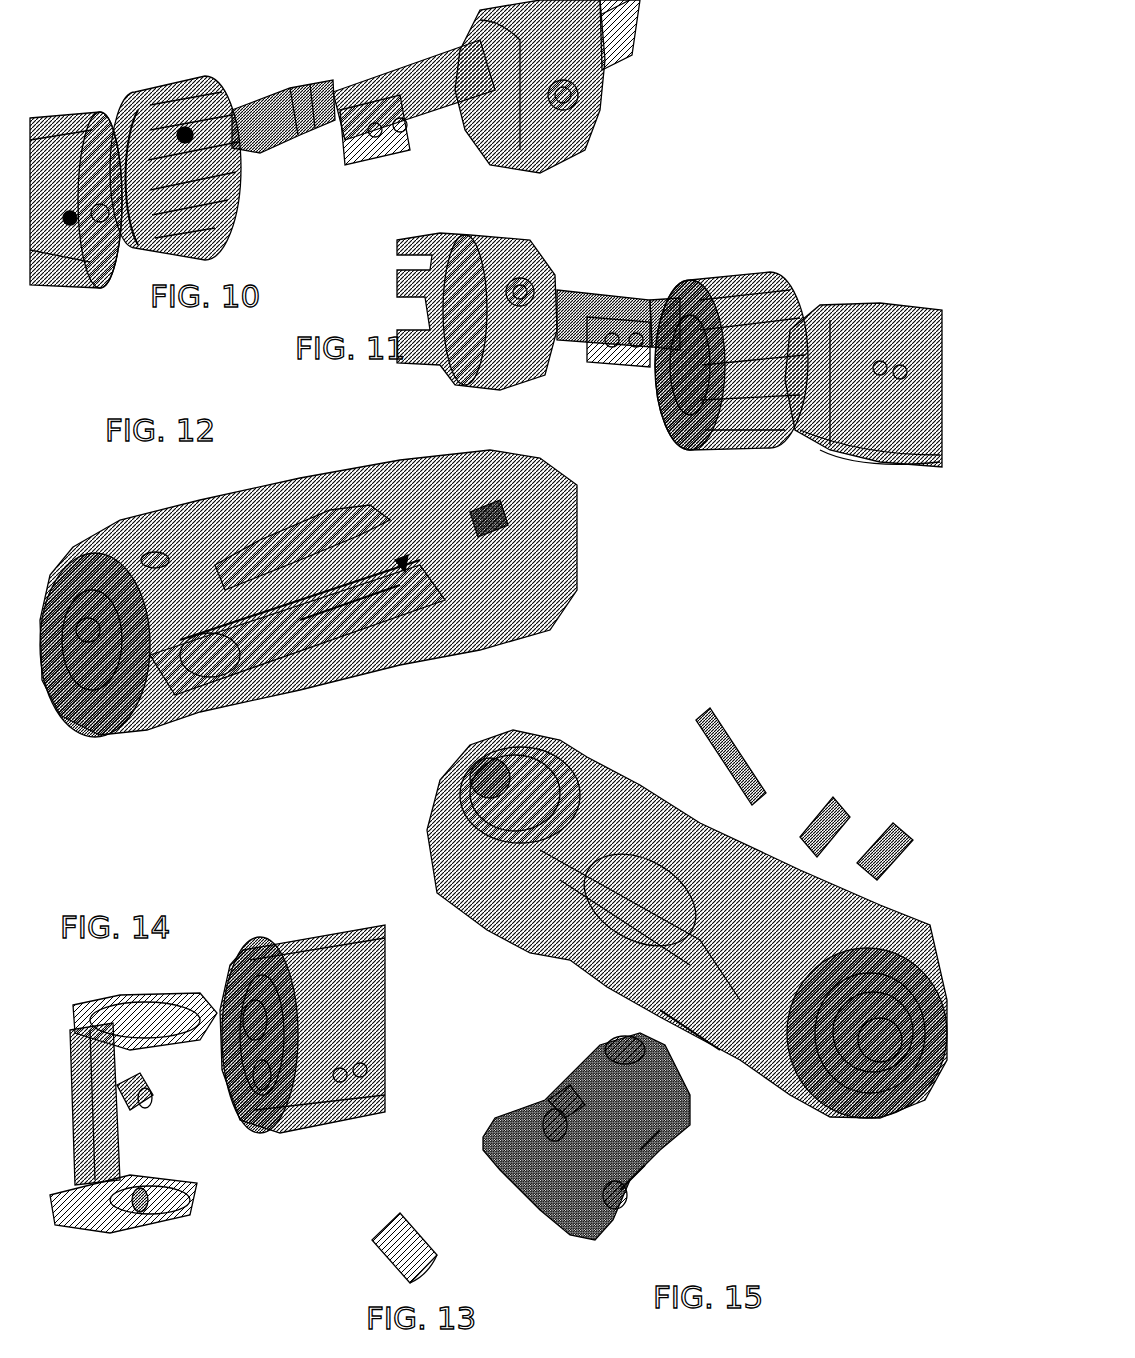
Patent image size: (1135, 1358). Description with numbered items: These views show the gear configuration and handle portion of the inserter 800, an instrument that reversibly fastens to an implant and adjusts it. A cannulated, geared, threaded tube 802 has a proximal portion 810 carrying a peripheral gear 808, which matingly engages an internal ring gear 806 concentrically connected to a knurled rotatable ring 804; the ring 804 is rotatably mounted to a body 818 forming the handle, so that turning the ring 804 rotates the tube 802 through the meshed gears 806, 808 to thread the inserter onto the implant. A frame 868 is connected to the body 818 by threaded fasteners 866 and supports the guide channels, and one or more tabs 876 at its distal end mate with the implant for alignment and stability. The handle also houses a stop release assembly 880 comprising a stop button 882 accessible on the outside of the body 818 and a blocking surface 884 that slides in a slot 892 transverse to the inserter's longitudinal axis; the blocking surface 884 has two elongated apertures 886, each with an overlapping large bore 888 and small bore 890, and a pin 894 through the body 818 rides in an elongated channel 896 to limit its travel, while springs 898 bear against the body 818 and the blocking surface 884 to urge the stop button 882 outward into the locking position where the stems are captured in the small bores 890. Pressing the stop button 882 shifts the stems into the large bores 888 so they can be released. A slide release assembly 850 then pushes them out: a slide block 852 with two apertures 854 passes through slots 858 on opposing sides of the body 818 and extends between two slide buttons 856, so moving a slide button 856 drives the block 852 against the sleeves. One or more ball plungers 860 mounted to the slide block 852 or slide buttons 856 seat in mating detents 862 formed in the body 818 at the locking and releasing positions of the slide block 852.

In FIG. 10, the inserter 800 is at (685, 30).
In FIG. 12, the inserter 800 is at (75, 535).
In FIG. 10, the threaded tube 802 is at (370, 78).
In FIG. 11, the threaded tube 802 is at (600, 300).
In FIG. 10, the rotatable ring 804 is at (195, 90).
In FIG. 11, the rotatable ring 804 is at (755, 432).
In FIG. 10, the internal ring gear 806 is at (150, 228).
In FIG. 11, the internal ring gear 806 is at (720, 305).
In FIG. 10, the peripheral gear 808 is at (265, 95).
In FIG. 11, the peripheral gear 808 is at (668, 300).
In FIG. 11, the proximal portion 810 is at (622, 285).
In FIG. 11, the body 818 is at (885, 318).
In FIG. 12, the body 818 is at (418, 482).
In FIG. 15, the body 818 is at (563, 753).
In FIG. 14, the slide release assembly 850 is at (205, 1160).
In FIG. 13, the slide release assembly 850 is at (442, 1268).
In FIG. 14, the slide block 852 is at (110, 1118).
In FIG. 14, the apertures 854 is at (68, 1107).
In FIG. 10, the slide button 856 is at (55, 125).
In FIG. 11, the slide button 856 is at (875, 458).
In FIG. 12, the slide button 856 is at (222, 668).
In FIG. 14, the slide button 856 is at (133, 1008).
In FIG. 13, the slot 858 is at (310, 940).
In FIG. 14, the ball plunger 860 is at (140, 1188).
In FIG. 13, the ball plunger 860 is at (378, 1235).
In FIG. 12, the detent 862 is at (355, 648).
In FIG. 13, the detent 862 is at (277, 965).
In FIG. 12, the threaded fastener 866 is at (155, 548).
In FIG. 10, the frame 868 is at (608, 100).
In FIG. 11, the frame 868 is at (500, 240).
In FIG. 15, the tabs 876 is at (818, 815).
In FIG. 15, the stop release assembly 880 is at (805, 1160).
In FIG. 15, the stop button 882 is at (483, 1140).
In FIG. 12, the blocking surface 884 is at (332, 488).
In FIG. 15, the blocking surface 884 is at (555, 1095).
In FIG. 15, the elongated aperture 886 is at (650, 1180).
In FIG. 15, the large bore 888 is at (645, 1145).
In FIG. 15, the small bore 890 is at (548, 1115).
In FIG. 12, the slot 892 is at (368, 605).
In FIG. 15, the slot 892 is at (700, 1050).
In FIG. 12, the pin 894 is at (405, 548).
In FIG. 15, the pin 894 is at (727, 731).
In FIG. 15, the elongated channel 896 is at (600, 1040).
In FIG. 15, the spring 898 is at (905, 1000).